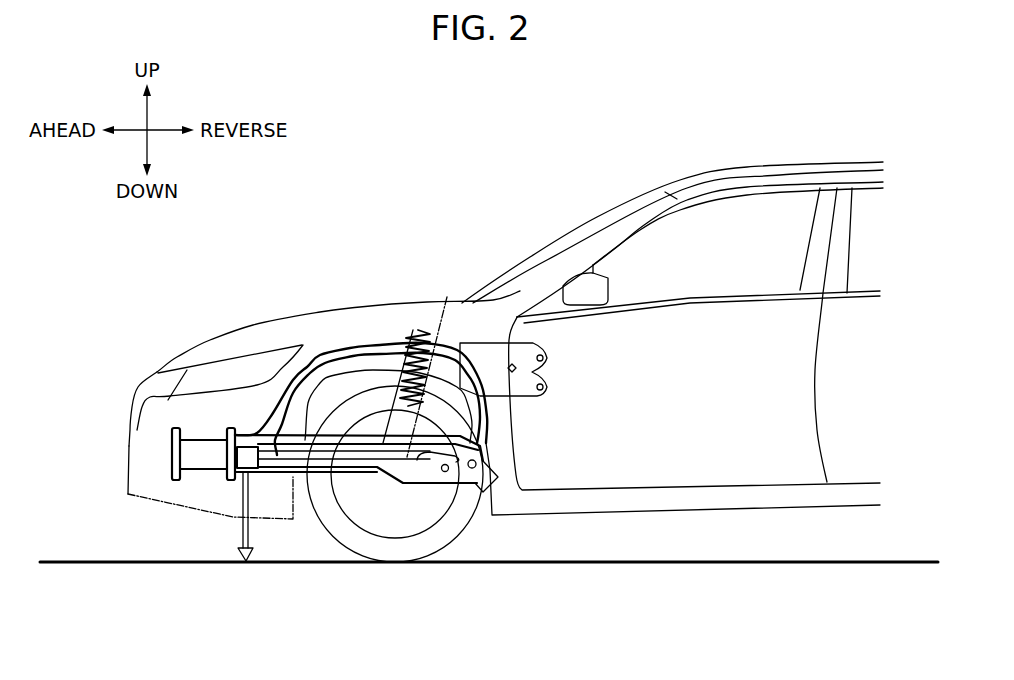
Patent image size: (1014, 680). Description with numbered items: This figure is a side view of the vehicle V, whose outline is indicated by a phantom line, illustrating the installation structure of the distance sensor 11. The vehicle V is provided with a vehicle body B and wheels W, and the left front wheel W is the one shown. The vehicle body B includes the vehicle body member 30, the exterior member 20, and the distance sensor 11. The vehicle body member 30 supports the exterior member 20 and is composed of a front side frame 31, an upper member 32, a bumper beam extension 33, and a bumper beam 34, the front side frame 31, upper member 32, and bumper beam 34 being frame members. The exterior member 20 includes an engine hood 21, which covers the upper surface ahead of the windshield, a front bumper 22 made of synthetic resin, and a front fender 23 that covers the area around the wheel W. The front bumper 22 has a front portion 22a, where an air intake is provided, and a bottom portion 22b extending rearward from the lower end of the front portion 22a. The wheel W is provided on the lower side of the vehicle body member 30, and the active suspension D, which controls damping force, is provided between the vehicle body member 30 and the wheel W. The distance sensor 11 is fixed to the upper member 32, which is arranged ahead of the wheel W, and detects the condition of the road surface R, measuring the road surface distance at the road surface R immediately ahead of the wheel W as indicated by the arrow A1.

The distance sensor 11 is at (233, 458).
The exterior member 20 is at (120, 400).
The engine hood 21 is at (303, 310).
The front bumper 22 is at (130, 432).
The front portion 22a is at (128, 460).
The bottom portion 22b is at (233, 515).
The front fender 23 is at (357, 327).
The vehicle body member 30 is at (387, 338).
The front side frame 31 is at (358, 473).
The upper member 32 is at (307, 372).
The bumper beam extension 33 is at (193, 470).
The bumper beam 34 is at (172, 468).
The arrow A1 is at (252, 530).
The vehicle body B is at (757, 168).
The active suspension D is at (447, 297).
The road surface R is at (902, 560).
The vehicle V is at (427, 215).
The wheel W is at (440, 533).